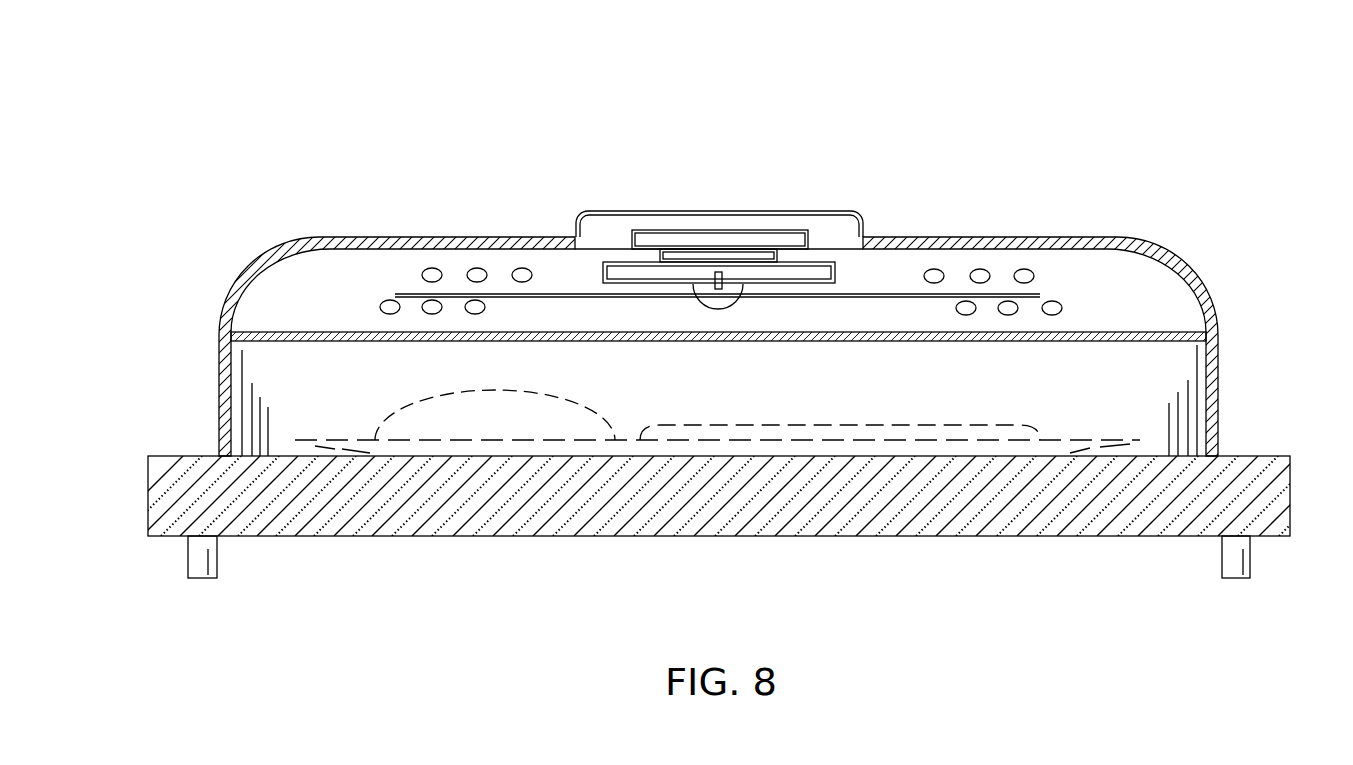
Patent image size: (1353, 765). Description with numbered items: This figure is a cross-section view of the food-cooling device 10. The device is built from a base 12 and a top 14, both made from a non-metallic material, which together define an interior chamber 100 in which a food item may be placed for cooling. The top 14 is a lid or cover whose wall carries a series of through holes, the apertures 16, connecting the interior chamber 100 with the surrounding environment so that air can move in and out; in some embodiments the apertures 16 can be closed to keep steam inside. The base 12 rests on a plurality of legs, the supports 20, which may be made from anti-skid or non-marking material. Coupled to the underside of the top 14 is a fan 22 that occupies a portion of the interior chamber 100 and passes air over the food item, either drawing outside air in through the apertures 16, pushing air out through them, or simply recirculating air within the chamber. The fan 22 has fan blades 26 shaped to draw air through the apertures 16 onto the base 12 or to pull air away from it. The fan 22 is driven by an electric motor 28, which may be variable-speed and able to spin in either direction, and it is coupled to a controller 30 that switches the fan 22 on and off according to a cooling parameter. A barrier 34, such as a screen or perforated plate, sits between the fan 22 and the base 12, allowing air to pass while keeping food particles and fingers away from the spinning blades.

The food-cooling device 10 is at (1160, 97).
The base 12 is at (728, 454).
The top 14 is at (714, 320).
The apertures 16 is at (428, 226).
The supports 20 is at (666, 557).
The fan 22 is at (767, 230).
The fan blades 26 is at (767, 244).
The motor 28 is at (719, 219).
The controller 30 is at (719, 198).
The barrier 34 is at (756, 293).
The interior chamber 100 is at (1134, 403).